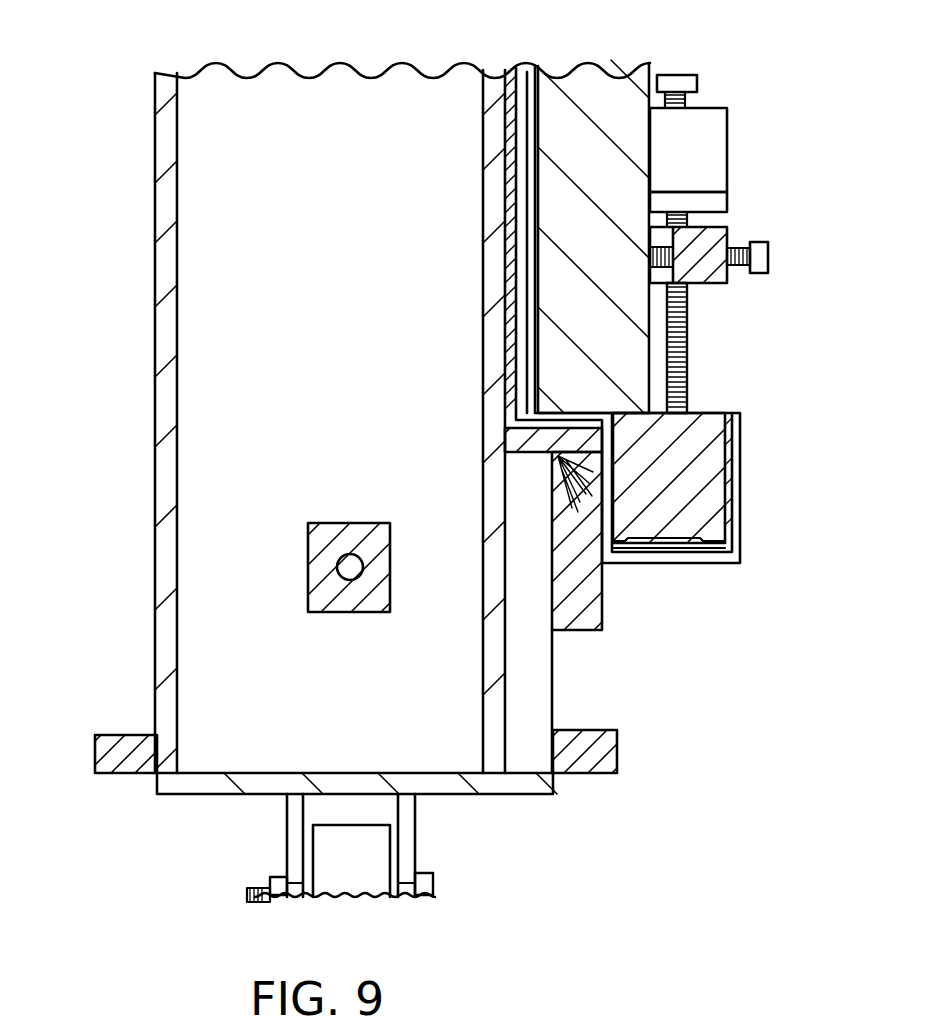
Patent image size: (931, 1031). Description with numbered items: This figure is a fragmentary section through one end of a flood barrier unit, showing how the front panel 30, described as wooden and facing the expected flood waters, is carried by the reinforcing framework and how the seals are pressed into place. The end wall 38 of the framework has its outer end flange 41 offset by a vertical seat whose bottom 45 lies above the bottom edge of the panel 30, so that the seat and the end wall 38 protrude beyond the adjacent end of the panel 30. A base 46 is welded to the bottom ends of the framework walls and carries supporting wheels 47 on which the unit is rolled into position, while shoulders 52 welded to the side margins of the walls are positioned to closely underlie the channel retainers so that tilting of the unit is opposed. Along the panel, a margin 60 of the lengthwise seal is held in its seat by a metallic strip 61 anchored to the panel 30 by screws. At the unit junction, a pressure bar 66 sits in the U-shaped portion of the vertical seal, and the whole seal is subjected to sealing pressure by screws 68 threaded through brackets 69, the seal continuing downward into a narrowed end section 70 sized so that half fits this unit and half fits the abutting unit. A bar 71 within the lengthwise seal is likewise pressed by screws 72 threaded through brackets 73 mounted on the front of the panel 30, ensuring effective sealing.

The front panel 30 is at (587, 607).
The end wall 38 is at (190, 436).
The outer end flange 41 is at (494, 275).
The bottom of vertical seat 45 is at (530, 447).
The base 46 is at (210, 788).
The supporting wheels 47 is at (347, 882).
The shoulders 52 is at (113, 763).
The margin of seal 60 is at (738, 526).
The metallic strip 61 is at (508, 220).
The pressure bar 66 is at (608, 92).
The screws 68 is at (760, 256).
The brackets 69 is at (710, 236).
The narrowed end section 70 is at (700, 553).
The bar 71 is at (700, 452).
The screws 72 is at (680, 344).
The brackets 73 is at (713, 142).